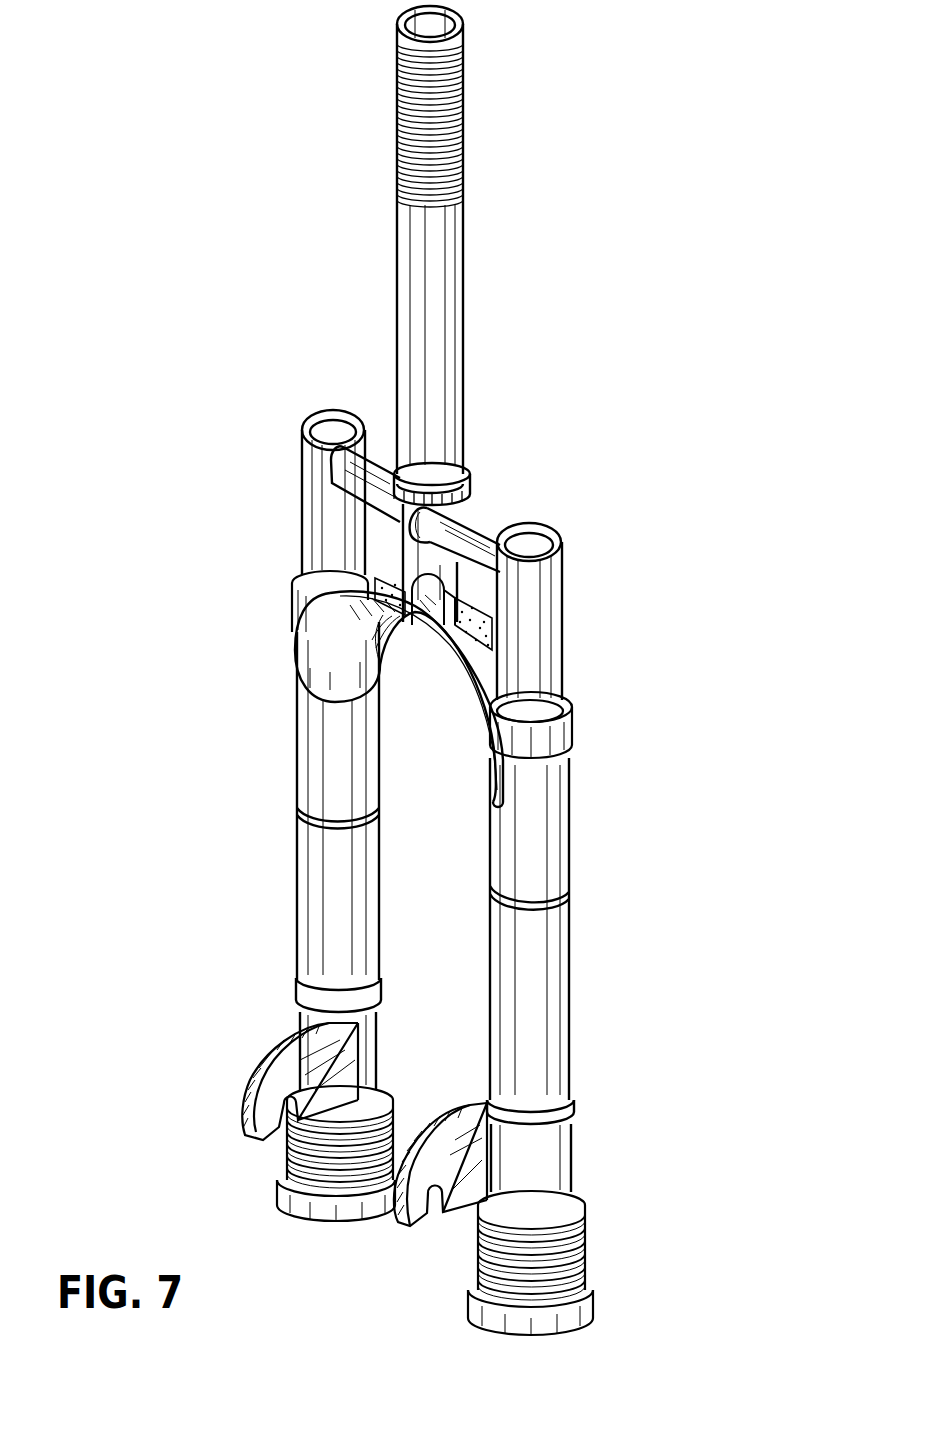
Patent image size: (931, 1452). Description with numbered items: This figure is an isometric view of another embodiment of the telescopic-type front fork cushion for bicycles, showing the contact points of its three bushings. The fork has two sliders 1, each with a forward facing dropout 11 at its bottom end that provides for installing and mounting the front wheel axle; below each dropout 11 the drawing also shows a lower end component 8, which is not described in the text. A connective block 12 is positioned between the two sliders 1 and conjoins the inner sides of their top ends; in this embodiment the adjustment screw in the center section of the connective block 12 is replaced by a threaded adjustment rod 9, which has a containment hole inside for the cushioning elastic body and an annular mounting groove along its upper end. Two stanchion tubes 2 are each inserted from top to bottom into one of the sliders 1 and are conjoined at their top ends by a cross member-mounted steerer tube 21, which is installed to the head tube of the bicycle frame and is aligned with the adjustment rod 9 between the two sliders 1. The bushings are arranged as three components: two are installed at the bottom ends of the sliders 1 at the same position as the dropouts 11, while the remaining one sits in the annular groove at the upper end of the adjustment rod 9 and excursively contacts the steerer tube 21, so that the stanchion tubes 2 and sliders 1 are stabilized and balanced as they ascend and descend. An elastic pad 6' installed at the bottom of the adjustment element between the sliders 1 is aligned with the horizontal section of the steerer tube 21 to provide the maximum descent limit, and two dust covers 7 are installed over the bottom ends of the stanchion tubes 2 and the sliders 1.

The slider 1 is at (297, 855).
The stanchion tube 2 is at (300, 500).
The elastic pad 6' is at (522, 577).
The dust cover 7 is at (292, 607).
The lower boot / axle holder 8 is at (283, 1164).
The threaded adjustment rod 9 is at (457, 566).
The dropout 11 is at (284, 1042).
The connective block 12 is at (330, 632).
The cross member-mounted steerer tube 21 is at (463, 325).